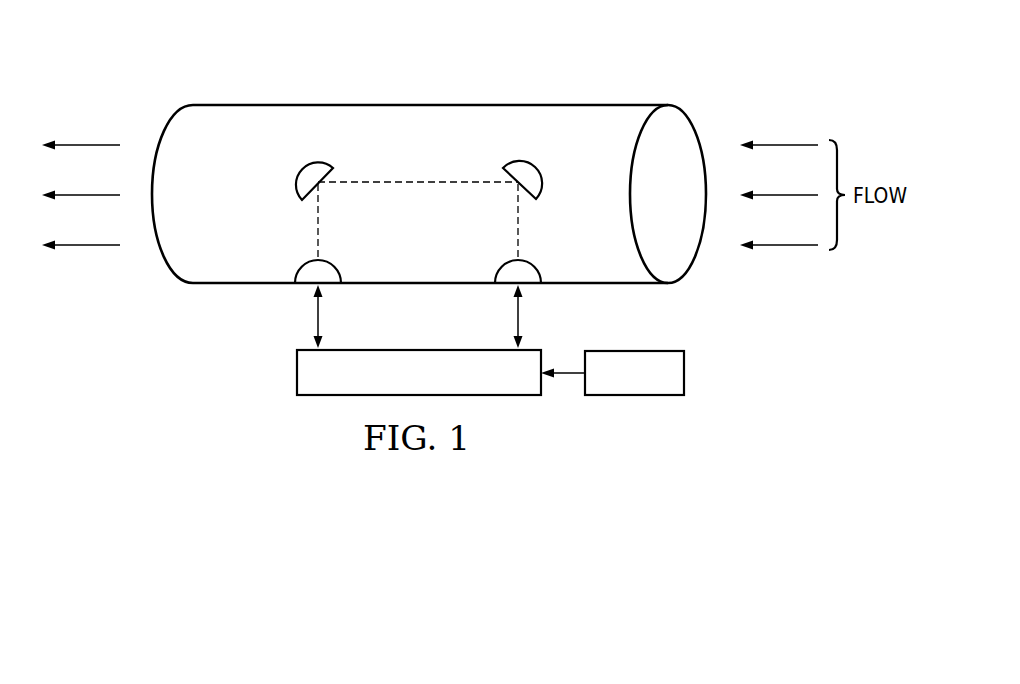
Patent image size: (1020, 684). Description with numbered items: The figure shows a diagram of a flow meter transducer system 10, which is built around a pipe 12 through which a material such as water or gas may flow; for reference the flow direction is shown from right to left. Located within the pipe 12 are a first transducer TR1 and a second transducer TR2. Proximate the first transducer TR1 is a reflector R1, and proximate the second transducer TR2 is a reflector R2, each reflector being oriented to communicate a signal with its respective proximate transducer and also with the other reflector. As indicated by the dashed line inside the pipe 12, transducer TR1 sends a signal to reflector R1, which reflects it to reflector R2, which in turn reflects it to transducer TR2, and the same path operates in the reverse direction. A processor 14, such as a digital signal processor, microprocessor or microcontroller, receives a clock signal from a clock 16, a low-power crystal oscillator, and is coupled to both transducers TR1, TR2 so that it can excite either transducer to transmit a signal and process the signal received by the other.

The flow meter transducer system 10 is at (267, 75).
The pipe 12 is at (430, 152).
The processor 14 is at (297, 383).
The clock 16 is at (684, 383).
The reflector R1 is at (522, 162).
The reflector R2 is at (314, 161).
The first transducer TR1 is at (539, 264).
The second transducer TR2 is at (296, 263).